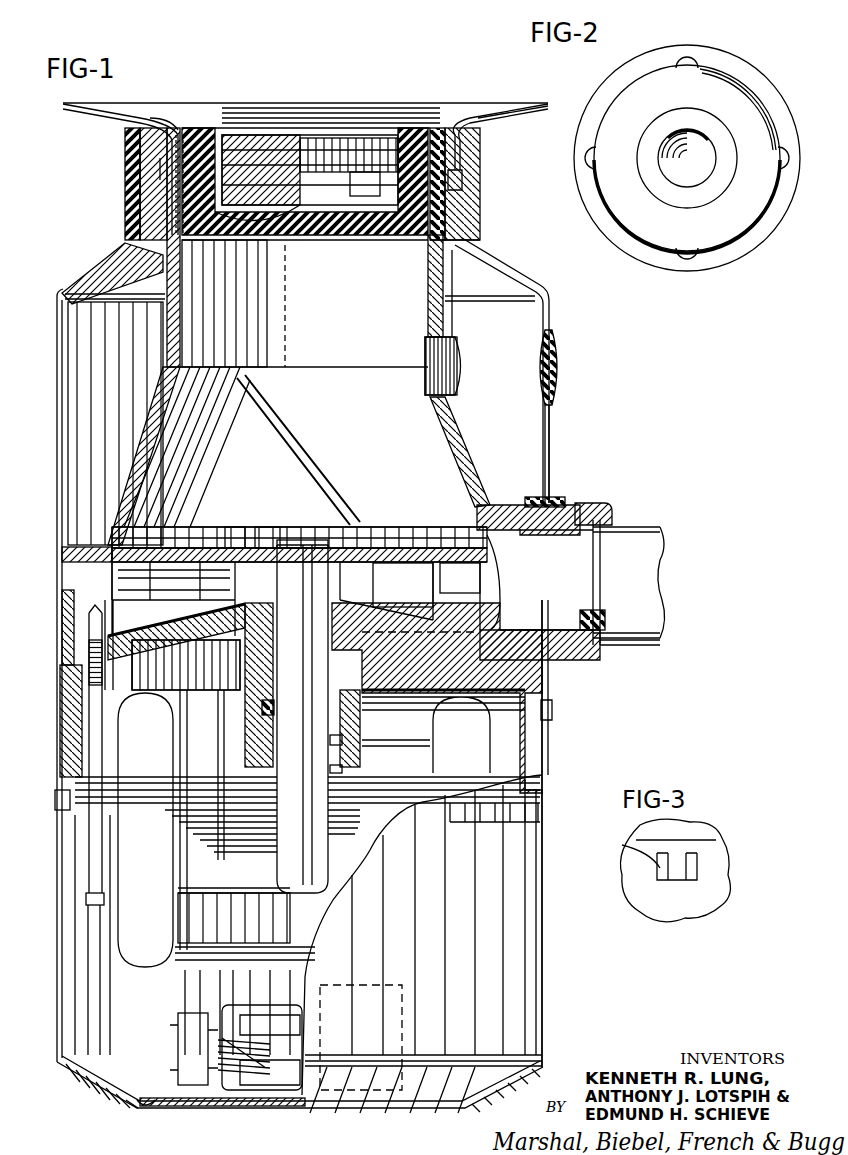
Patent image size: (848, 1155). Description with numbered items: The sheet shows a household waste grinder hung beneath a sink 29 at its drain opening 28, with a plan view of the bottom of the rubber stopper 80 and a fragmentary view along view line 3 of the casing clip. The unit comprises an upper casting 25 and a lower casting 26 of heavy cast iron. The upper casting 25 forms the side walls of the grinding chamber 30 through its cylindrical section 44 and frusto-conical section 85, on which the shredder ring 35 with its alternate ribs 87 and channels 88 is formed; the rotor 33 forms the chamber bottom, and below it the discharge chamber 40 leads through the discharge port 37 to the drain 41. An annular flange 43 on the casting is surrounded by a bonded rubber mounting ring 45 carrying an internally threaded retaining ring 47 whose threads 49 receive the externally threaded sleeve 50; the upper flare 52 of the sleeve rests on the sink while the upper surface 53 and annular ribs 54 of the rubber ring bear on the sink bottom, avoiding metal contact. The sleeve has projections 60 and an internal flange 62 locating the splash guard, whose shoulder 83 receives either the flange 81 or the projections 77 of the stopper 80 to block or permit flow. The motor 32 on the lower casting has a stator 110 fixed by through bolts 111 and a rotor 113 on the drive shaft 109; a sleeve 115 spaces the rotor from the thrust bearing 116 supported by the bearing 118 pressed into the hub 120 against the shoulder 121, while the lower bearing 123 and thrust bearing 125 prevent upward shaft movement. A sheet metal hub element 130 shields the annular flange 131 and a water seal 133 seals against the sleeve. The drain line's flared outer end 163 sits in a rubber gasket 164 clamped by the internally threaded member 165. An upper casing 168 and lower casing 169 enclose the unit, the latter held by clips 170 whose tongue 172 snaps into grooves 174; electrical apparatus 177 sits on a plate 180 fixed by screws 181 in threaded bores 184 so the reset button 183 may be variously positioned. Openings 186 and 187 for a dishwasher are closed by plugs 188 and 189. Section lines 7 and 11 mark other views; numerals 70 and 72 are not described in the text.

In FIG. 1, the upper casting 25 is at (158, 358).
In FIG. 1, the lower casting 26 is at (55, 680).
In FIG. 3, the lower casting 26 is at (696, 836).
In FIG. 1, the drain opening 28 is at (310, 100).
In FIG. 1, the sink 29 is at (76, 112).
In FIG. 1, the grinding chamber 30 is at (336, 414).
In FIG. 1, the motor 32 is at (158, 975).
In FIG. 1, the rotor 33 is at (500, 570).
In FIG. 1, the shredder ring 35 is at (371, 522).
In FIG. 1, the discharge port 37 is at (580, 552).
In FIG. 1, the discharge chamber 40 is at (112, 620).
In FIG. 1, the drain 41 is at (640, 642).
In FIG. 1, the annular flange 43 is at (145, 208).
In FIG. 1, the cylindrical section 44 is at (172, 290).
In FIG. 1, the rubber mounting ring 45 is at (130, 148).
In FIG. 1, the retaining ring 47 is at (160, 178).
In FIG. 1, the threads 49 is at (462, 185).
In FIG. 1, the sleeve 50 is at (180, 135).
In FIG. 1, the upper flare 52 is at (163, 118).
In FIG. 1, the upper surface 53 is at (482, 124).
In FIG. 1, the annular ribs 54 is at (472, 118).
In FIG. 1, the projections 60 is at (165, 168).
In FIG. 1, the internal flange 62 is at (405, 237).
In FIG. 1, the rim 70 is at (270, 240).
In FIG. 1, the flap 72 is at (295, 225).
In FIG. 1, the projections 77 is at (360, 172).
In FIG. 2, the projections 77 is at (686, 58).
In FIG. 1, the rubber stopper 80 is at (343, 140).
In FIG. 2, the rubber stopper 80 is at (755, 252).
In FIG. 1, the flange 81 is at (408, 130).
In FIG. 2, the flange 81 is at (620, 238).
In FIG. 1, the shoulder 83 is at (482, 145).
In FIG. 1, the frusto-conical section 85 is at (158, 440).
In FIG. 1, the ribs 87 is at (240, 527).
In FIG. 1, the channels 88 is at (268, 527).
In FIG. 1, the drive shaft 109 is at (284, 866).
In FIG. 1, the stator 110 is at (152, 926).
In FIG. 1, the through bolts 111 is at (93, 905).
In FIG. 1, the rotor 113 is at (215, 868).
In FIG. 1, the sleeve 115 is at (328, 545).
In FIG. 1, the thrust bearing 116 is at (300, 658).
In FIG. 1, the bearing 118 is at (365, 650).
In FIG. 1, the hub 120 is at (235, 672).
In FIG. 1, the shoulder 121 is at (271, 700).
In FIG. 1, the lower bearing 123 is at (342, 745).
In FIG. 1, the thrust bearing 125 is at (345, 770).
In FIG. 1, the hub element 130 is at (392, 560).
In FIG. 1, the annular flange 131 is at (370, 582).
In FIG. 1, the water seal 133 is at (268, 630).
In FIG. 1, the flared outer end 163 is at (590, 625).
In FIG. 1, the rubber gasket 164 is at (608, 522).
In FIG. 1, the internally threaded member 165 is at (575, 498).
In FIG. 1, the upper casing 168 is at (550, 428).
In FIG. 1, the lower casing 169 is at (550, 915).
In FIG. 3, the lower casing 169 is at (708, 905).
In FIG. 3, the clips 170 is at (661, 884).
In FIG. 1, the tongue 172 is at (60, 740).
In FIG. 3, the tongue 172 is at (712, 866).
In FIG. 1, the grooves 174 is at (550, 735).
In FIG. 3, the grooves 174 is at (624, 847).
In FIG. 1, the electrical apparatus 177 is at (174, 1047).
In FIG. 1, the plate 180 is at (278, 1100).
In FIG. 1, the screws 181 is at (162, 1110).
In FIG. 1, the reset button 183 is at (200, 1098).
In FIG. 1, the threaded bores 184 is at (140, 1105).
In FIG. 1, the opening 186 is at (455, 405).
In FIG. 1, the opening 187 is at (550, 420).
In FIG. 1, the plug 188 is at (462, 362).
In FIG. 1, the plug 189 is at (562, 362).
In FIG. 1, the view line 3— 3 is at (568, 740).
In FIG. 1, the section line 7- 7 is at (35, 556).
In FIG. 1, the section line 11- 11 is at (70, 210).